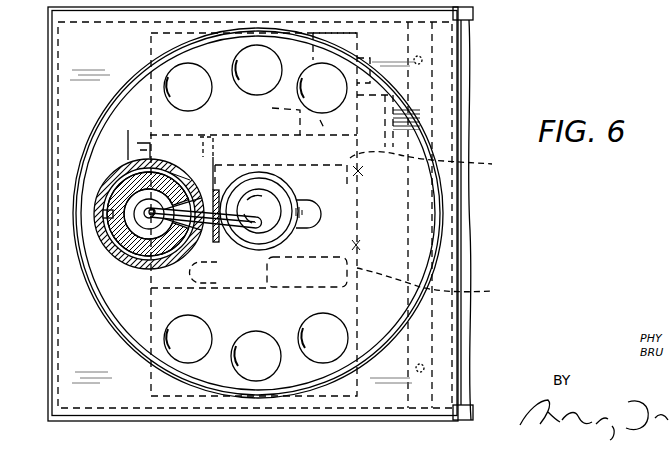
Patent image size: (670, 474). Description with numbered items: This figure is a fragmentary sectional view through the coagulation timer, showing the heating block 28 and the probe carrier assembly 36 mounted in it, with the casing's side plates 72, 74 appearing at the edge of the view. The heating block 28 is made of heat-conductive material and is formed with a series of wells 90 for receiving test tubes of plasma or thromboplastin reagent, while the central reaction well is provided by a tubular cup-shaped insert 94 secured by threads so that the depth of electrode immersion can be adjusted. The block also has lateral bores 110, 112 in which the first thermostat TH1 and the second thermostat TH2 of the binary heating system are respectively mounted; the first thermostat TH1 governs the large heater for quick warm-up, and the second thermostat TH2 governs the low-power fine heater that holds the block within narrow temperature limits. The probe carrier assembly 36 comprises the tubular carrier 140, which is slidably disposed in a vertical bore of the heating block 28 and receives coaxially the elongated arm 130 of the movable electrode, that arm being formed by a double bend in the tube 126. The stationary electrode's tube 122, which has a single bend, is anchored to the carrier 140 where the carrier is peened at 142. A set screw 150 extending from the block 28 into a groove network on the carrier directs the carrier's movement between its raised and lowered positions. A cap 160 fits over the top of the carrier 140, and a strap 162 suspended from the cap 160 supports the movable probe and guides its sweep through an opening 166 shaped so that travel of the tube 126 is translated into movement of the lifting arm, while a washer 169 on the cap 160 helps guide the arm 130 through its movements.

The heating block 28 is at (122, 323).
The probe carrier assembly 36 is at (122, 168).
The side plate 72 is at (462, 419).
The side plate 74 is at (474, 13).
The wells 90 is at (227, 57).
The cup-shaped insert 94 is at (280, 170).
The lateral bore 110 is at (292, 293).
The lateral bore 112 is at (256, 120).
The tube 122 is at (254, 210).
The tube 126 is at (272, 228).
The elongated arm 130 is at (137, 165).
The tubular carrier 140 is at (138, 270).
The peened portion 142 is at (150, 143).
The set screw 150 is at (97, 192).
The cap 160 is at (113, 257).
The strap 162 is at (216, 242).
The opening 166 is at (212, 157).
The washer 169 is at (103, 195).
The first thermostat TH1 is at (361, 244).
The second thermostat TH2 is at (363, 176).